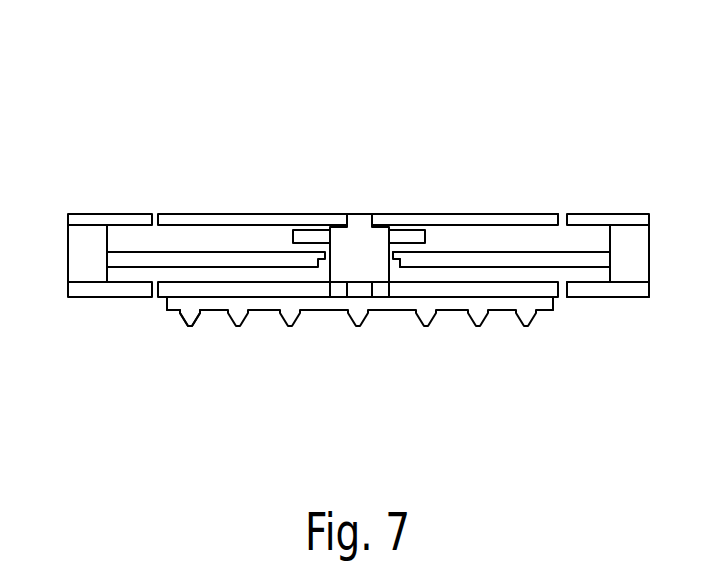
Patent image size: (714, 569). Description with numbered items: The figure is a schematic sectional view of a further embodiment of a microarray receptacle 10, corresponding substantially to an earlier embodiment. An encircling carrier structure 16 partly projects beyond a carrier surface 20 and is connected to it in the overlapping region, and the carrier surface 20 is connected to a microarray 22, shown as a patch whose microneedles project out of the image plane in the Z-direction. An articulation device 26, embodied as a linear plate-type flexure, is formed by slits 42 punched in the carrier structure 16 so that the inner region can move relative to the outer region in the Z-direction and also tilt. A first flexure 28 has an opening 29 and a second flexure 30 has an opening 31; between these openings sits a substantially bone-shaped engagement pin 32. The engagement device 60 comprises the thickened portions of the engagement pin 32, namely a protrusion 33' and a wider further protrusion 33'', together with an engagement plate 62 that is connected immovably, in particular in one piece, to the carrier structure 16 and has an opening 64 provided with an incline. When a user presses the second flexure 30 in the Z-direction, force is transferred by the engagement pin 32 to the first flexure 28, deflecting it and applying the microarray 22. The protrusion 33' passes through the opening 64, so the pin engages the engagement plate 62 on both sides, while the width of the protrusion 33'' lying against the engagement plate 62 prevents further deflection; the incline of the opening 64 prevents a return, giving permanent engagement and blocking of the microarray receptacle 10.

The microarray receptacle 10 is at (111, 133).
The carrier structure 16 is at (88, 243).
The carrier surface 20 is at (497, 292).
The microarray 22 is at (212, 328).
The articulation device 26 is at (517, 112).
The first flexure 28 is at (95, 293).
The opening 29 is at (352, 341).
The second flexure 30 is at (548, 212).
The opening 31 is at (368, 199).
The engagement pin 32 is at (357, 262).
The protrusion 33' is at (414, 326).
The further protrusion 33'' is at (446, 192).
The slit 42 is at (157, 213).
The engagement device 60 is at (293, 235).
The engagement plate 62 is at (563, 262).
The opening 64 is at (323, 288).